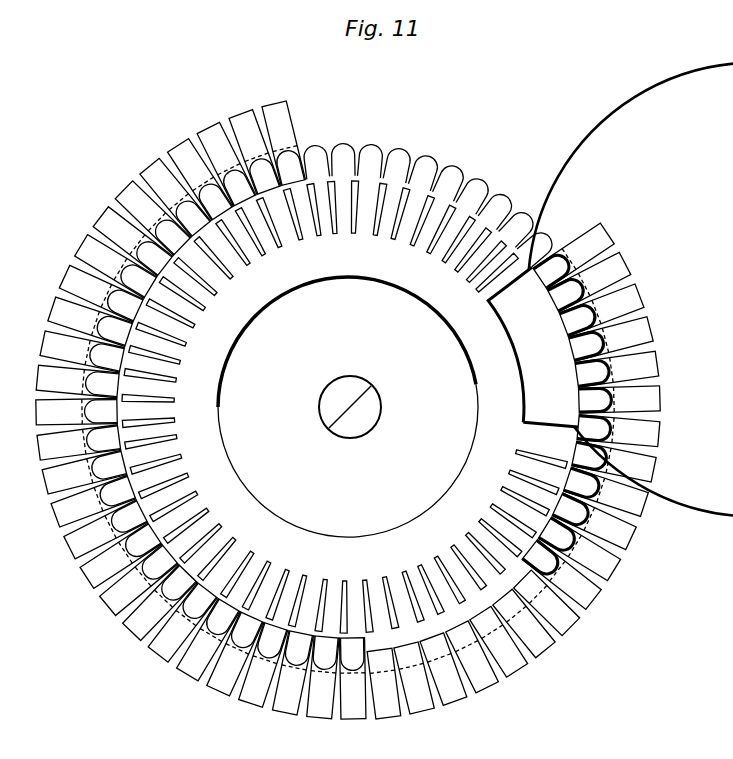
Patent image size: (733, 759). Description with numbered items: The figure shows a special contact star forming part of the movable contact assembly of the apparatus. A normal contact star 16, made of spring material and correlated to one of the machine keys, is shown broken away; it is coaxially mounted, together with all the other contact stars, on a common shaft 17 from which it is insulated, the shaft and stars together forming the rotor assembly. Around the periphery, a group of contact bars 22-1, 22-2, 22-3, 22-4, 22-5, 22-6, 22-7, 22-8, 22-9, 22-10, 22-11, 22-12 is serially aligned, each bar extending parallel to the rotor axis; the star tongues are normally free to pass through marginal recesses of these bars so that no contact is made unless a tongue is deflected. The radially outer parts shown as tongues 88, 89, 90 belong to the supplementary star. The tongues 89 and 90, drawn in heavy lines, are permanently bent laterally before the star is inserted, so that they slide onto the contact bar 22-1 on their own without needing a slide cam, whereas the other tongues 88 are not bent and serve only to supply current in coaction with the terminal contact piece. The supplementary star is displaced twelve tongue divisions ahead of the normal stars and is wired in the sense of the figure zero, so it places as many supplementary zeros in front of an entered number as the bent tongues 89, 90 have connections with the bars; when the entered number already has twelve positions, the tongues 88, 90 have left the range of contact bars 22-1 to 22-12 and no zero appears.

The contact star 16 is at (220, 387).
The shaft 17 is at (357, 415).
The contact tongues 88 is at (427, 168).
The bent tongues 89 is at (556, 268).
The bent tongues 90 is at (523, 557).
The contact bar 22-1 is at (591, 245).
The contact bar 22-2 is at (607, 273).
The contact bar 22-3 is at (621, 303).
The contact bar 22-4 is at (631, 334).
The contact bar 22-5 is at (637, 366).
The contact bar 22-6 is at (640, 399).
The contact bar 22-7 is at (639, 432).
The contact bar 22-8 is at (634, 466).
The contact bar 22-9 is at (625, 498).
The contact bar 22-10 is at (613, 530).
The contact bar 22-11 is at (597, 560).
The contact bar 22-12 is at (578, 587).